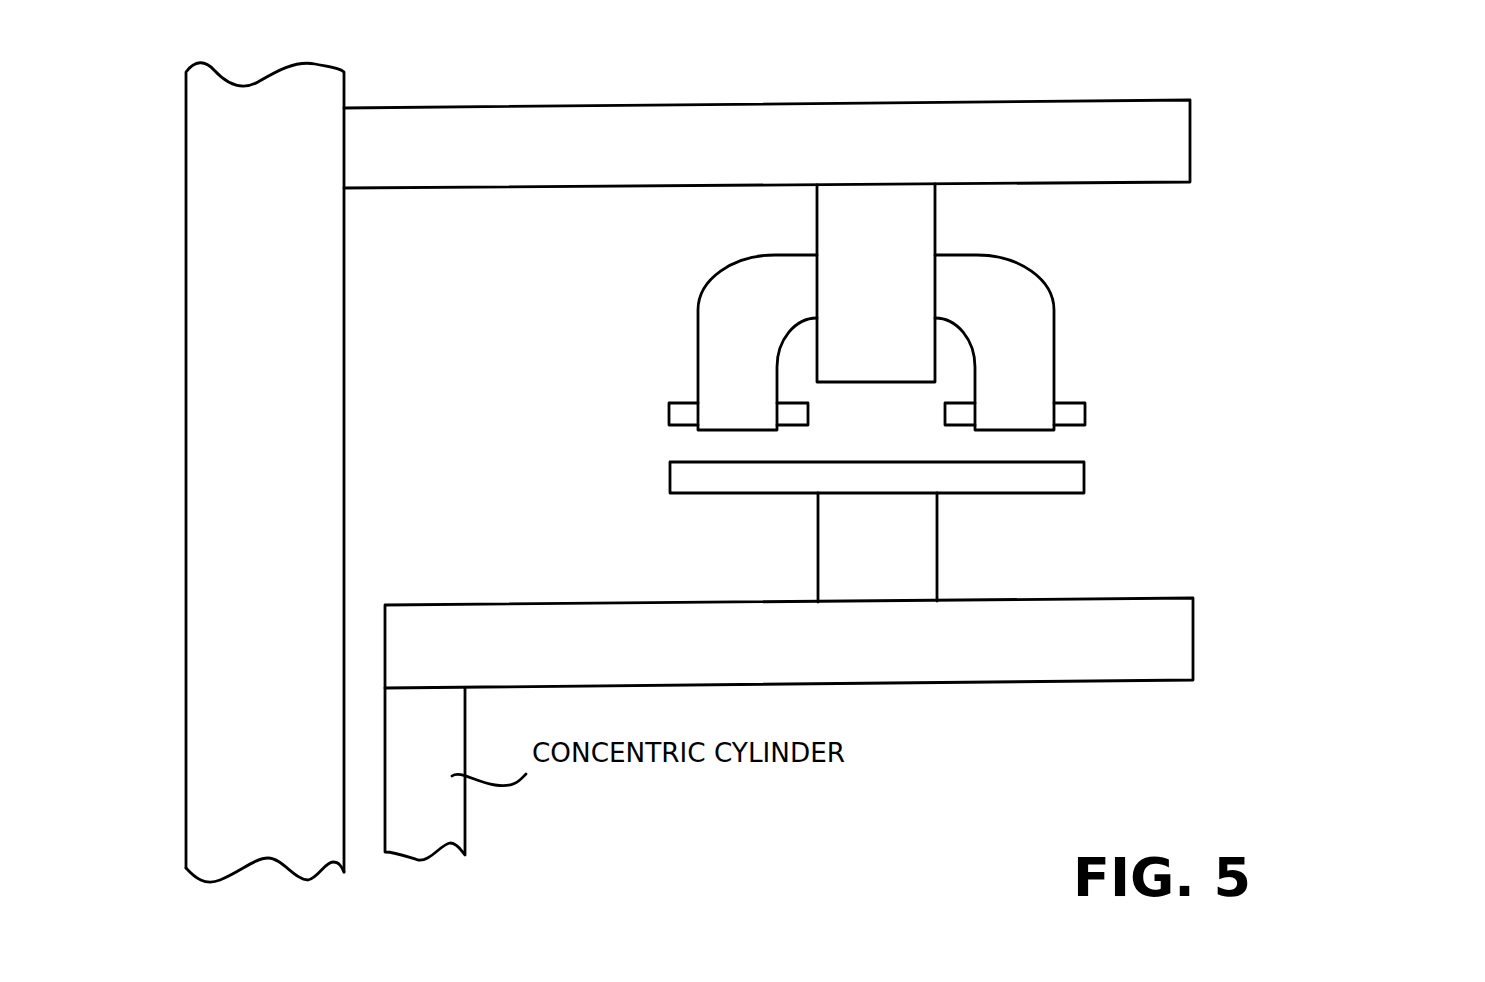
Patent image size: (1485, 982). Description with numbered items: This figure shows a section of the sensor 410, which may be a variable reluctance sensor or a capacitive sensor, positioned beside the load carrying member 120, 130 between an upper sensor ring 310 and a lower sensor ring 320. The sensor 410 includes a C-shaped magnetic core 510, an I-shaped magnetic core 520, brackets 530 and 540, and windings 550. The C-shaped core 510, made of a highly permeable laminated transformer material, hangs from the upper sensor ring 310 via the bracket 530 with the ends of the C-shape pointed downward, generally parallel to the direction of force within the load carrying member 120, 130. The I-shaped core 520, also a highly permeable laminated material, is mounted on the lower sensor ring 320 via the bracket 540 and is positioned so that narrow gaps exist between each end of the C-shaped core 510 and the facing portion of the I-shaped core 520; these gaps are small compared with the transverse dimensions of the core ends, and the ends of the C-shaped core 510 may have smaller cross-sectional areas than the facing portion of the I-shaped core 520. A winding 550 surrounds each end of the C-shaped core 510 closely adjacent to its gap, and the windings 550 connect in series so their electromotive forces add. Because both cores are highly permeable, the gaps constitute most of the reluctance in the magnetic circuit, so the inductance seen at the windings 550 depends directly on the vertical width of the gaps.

The load carrying member 120 is at (265, 472).
The load carrying member 130 is at (265, 472).
The upper sensor ring 310 is at (1190, 138).
The lower sensor ring 320 is at (1193, 637).
The sensor 410 is at (1310, 198).
The C-shaped magnetic core 510 is at (1054, 325).
The I-shaped magnetic core 520 is at (670, 480).
The bracket 530 is at (876, 283).
The bracket 540 is at (877, 547).
The winding 550 is at (1280, 422).